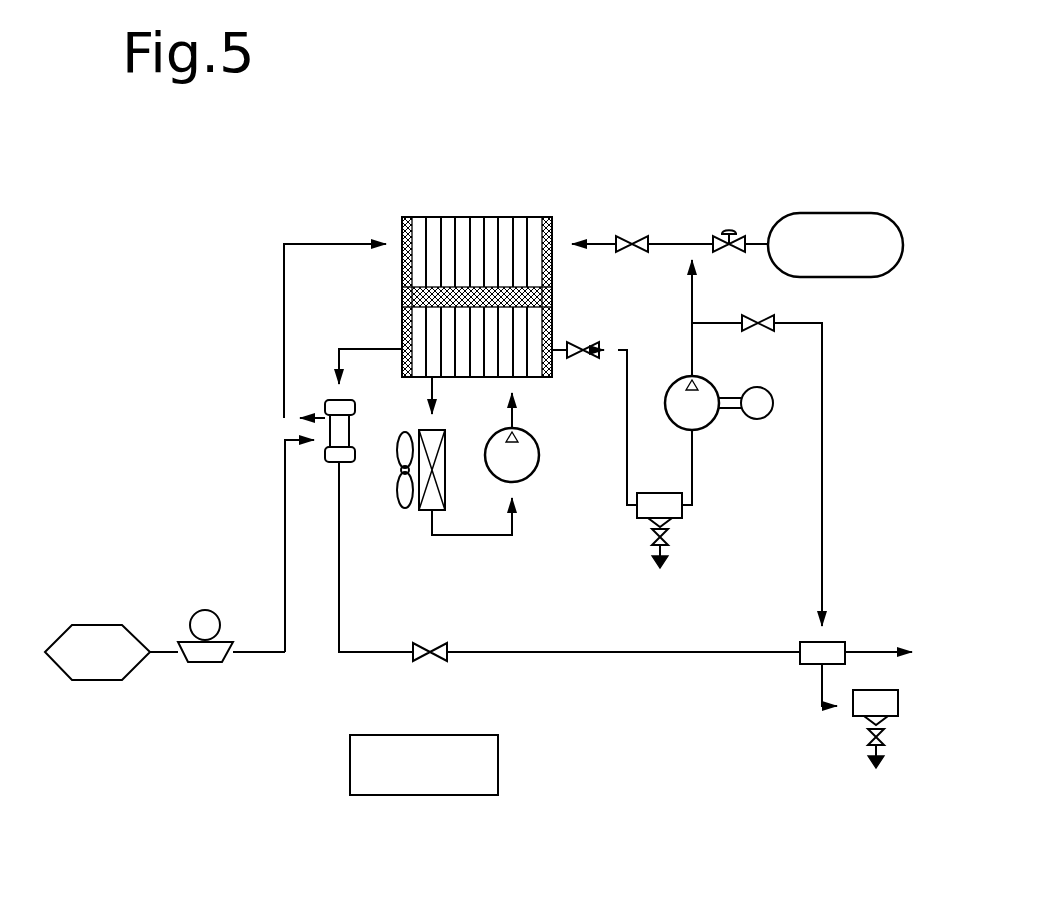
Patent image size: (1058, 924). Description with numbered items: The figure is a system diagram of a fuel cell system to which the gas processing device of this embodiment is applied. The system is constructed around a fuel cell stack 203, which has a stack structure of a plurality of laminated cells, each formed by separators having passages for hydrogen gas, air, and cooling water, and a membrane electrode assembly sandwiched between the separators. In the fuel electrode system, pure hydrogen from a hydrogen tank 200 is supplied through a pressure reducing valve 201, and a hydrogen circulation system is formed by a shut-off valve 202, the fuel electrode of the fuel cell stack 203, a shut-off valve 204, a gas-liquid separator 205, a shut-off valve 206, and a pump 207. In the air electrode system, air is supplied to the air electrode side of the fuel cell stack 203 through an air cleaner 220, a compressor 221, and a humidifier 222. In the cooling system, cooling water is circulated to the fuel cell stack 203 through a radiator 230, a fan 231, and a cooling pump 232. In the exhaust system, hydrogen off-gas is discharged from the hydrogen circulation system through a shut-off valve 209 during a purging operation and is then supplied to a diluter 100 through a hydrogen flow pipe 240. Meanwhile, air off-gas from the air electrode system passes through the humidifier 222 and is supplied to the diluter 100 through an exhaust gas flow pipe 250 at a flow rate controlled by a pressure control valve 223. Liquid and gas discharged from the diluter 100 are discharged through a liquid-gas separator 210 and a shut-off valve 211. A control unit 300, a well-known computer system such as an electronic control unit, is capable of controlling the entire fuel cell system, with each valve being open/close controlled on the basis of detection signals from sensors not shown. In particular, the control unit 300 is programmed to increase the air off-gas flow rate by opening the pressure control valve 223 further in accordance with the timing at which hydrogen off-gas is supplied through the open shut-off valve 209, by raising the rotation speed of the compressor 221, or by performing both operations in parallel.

The diluter 100 is at (800, 645).
The hydrogen tank 200 is at (793, 213).
The pressure reducing valve 201 is at (729, 232).
The shut-off valve 202 is at (632, 243).
The fuel cell stack 203 is at (503, 217).
The shut-off valve 204 is at (583, 348).
The gas-liquid separator 205 is at (640, 518).
The shut-off valve 206 is at (652, 537).
The pump 207 is at (712, 420).
The shut-off valve 209 is at (758, 331).
The liquid-gas separator 210 is at (856, 716).
The shut-off valve 211 is at (868, 742).
The air cleaner 220 is at (98, 625).
The compressor 221 is at (205, 610).
The humidifier 222 is at (355, 405).
The pressure control valve 223 is at (432, 661).
The radiator 230 is at (425, 512).
The fan 231 is at (400, 506).
The cooling pump 232 is at (539, 455).
The hydrogen flow pipe 240 is at (822, 580).
The exhaust gas flow pipe 250 is at (712, 652).
The control unit 300 is at (498, 738).